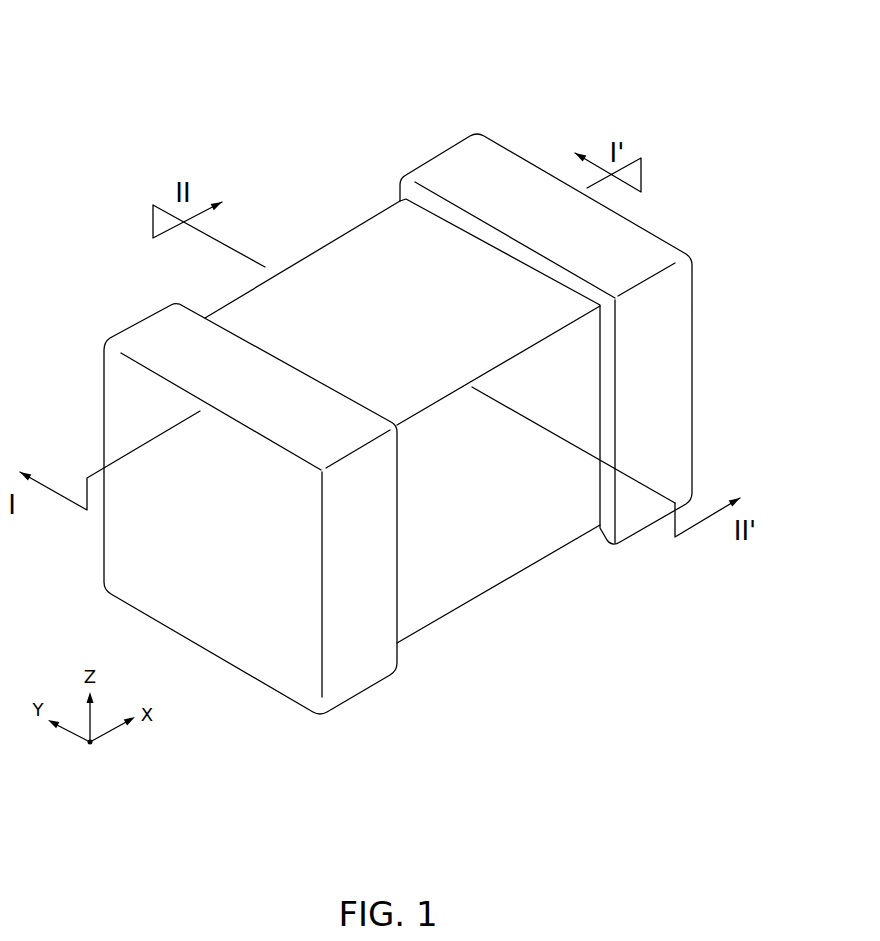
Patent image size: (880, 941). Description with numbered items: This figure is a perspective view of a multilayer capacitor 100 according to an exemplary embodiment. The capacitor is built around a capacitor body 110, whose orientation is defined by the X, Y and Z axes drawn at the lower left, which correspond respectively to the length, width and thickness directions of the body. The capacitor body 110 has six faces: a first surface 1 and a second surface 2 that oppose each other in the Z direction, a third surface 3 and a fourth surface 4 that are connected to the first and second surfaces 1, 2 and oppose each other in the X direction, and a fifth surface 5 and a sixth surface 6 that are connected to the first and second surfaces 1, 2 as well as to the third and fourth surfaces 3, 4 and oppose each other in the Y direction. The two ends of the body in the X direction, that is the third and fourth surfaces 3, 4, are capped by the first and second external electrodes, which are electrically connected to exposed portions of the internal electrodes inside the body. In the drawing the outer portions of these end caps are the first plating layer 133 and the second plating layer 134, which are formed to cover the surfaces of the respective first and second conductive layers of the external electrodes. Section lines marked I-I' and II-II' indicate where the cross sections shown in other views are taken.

The multilayer capacitor 100 is at (90, 66).
The capacitor body 110 is at (302, 258).
The first surface 1 is at (445, 585).
The second surface 2 is at (395, 252).
The third surface 3 is at (143, 538).
The fourth surface 4 is at (503, 172).
The fifth surface 5 is at (520, 532).
The sixth surface 6 is at (244, 315).
The first plating layer 133 is at (143, 337).
The second plating layer 134 is at (457, 157).